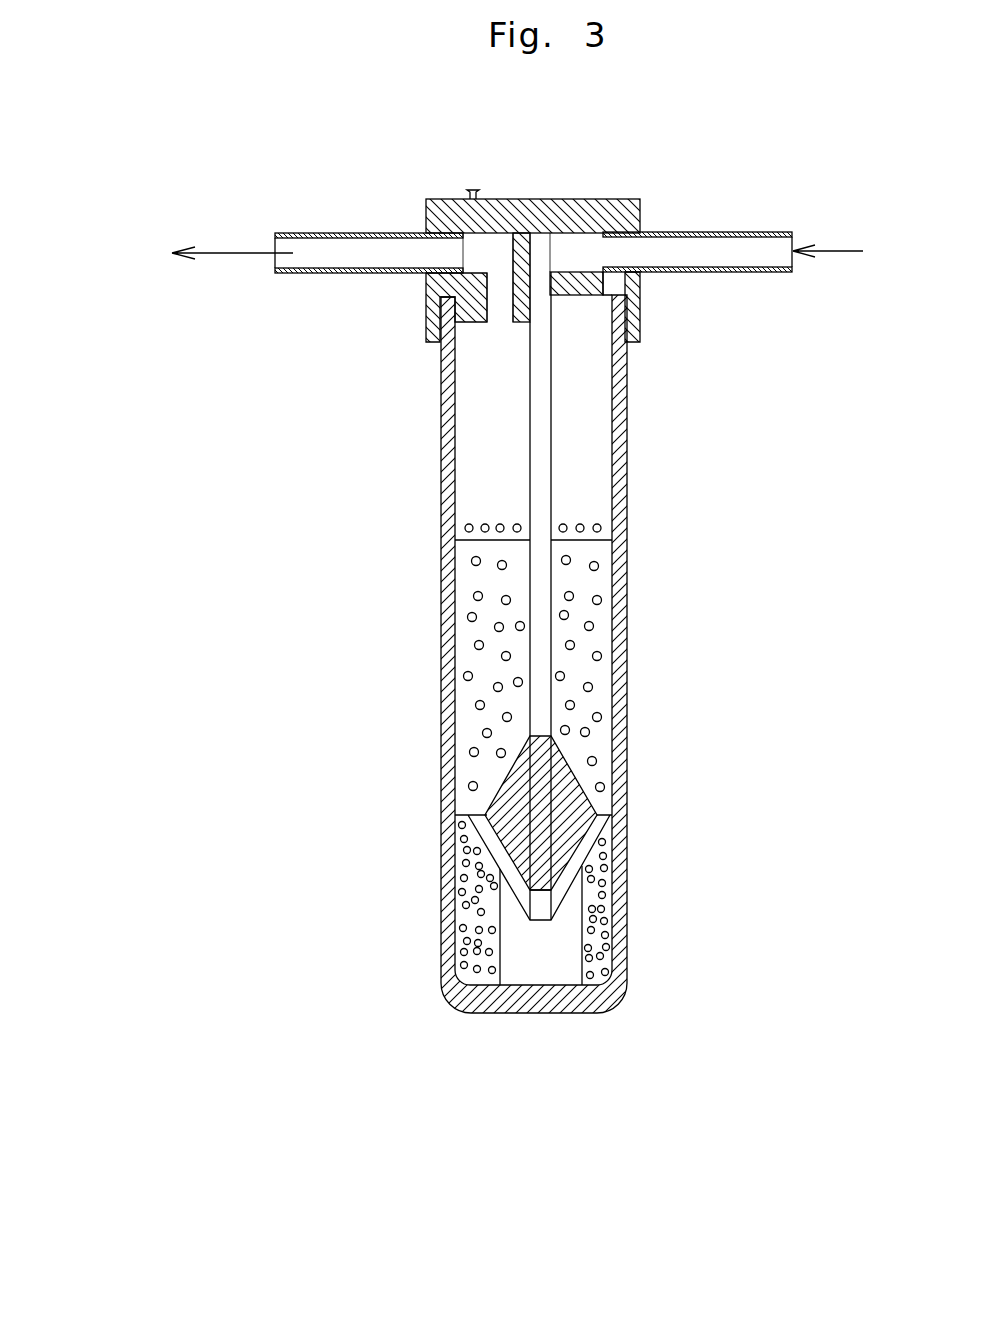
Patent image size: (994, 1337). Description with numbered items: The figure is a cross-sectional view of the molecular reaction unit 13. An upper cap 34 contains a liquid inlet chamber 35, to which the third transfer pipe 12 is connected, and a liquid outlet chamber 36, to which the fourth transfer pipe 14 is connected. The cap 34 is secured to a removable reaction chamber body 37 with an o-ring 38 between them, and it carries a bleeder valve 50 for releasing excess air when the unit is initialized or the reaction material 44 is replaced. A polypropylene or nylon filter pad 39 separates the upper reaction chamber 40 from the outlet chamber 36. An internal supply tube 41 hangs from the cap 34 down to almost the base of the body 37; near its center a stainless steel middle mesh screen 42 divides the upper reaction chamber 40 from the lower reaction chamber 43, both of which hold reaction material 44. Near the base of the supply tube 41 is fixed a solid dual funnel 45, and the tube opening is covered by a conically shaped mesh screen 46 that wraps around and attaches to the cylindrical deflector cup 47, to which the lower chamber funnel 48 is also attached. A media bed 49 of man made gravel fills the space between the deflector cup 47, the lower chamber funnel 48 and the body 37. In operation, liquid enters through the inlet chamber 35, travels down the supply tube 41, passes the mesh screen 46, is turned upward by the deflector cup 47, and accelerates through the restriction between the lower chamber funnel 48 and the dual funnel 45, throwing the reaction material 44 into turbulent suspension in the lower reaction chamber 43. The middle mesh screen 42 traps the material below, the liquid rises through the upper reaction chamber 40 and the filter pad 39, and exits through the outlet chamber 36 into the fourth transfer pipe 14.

The third transfer pipe 12 is at (745, 227).
The molecular reaction unit 13 is at (293, 572).
The fourth transfer pipe 14 is at (322, 228).
The upper cap 34 is at (535, 198).
The liquid inlet chamber 35 is at (592, 247).
The liquid outlet chamber 36 is at (478, 247).
The reaction chamber body 37 is at (630, 450).
The o-ring 38 is at (627, 313).
The filter pad 39 is at (492, 332).
The upper reaction chamber 40 is at (492, 458).
The internal supply tube 41 is at (552, 497).
The middle mesh screen 42 is at (583, 540).
The lower reaction chamber 43 is at (483, 688).
The reaction material 44 is at (502, 525).
The dual funnel 45 is at (570, 770).
The conical mesh screen 46 is at (545, 923).
The deflector cup 47 is at (498, 918).
The lower chamber funnel 48 is at (600, 848).
The media bed 49 is at (603, 960).
The bleeder valve 50 is at (473, 183).